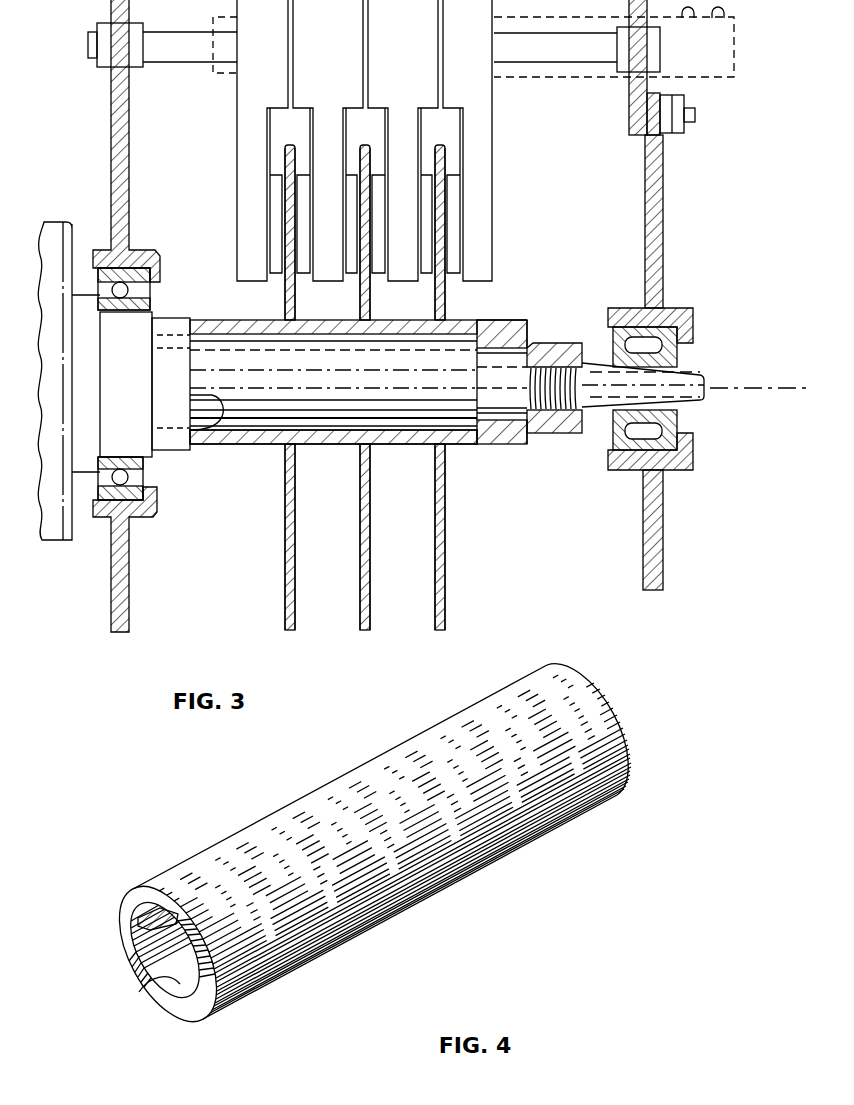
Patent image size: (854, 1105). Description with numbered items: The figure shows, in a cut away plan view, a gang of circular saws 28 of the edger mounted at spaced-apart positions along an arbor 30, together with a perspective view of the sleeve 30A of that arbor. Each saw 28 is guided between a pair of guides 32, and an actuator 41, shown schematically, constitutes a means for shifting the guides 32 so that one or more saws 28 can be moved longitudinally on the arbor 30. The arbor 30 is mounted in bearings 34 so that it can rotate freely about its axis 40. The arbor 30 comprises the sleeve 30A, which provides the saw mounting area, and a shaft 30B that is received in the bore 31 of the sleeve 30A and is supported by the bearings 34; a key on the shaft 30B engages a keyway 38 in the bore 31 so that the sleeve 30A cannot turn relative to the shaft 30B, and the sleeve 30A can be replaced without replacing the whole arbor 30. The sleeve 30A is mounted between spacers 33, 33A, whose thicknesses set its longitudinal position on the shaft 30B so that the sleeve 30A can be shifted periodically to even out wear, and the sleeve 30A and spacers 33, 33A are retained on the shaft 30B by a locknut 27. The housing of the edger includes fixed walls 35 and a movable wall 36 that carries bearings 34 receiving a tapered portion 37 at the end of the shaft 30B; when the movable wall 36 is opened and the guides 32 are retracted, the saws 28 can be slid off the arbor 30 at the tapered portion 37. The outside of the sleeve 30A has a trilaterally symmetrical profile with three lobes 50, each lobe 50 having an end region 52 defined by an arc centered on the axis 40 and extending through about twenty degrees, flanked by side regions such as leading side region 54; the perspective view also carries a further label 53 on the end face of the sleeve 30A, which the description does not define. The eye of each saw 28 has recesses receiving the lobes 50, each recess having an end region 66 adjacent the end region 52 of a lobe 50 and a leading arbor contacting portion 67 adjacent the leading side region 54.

In FIG. 3, the locknut 27 is at (568, 436).
In FIG. 3, the circular saw 28 is at (280, 150).
In FIG. 3, the arbor 30 is at (528, 298).
In FIG. 3, the sleeve 30A is at (230, 449).
In FIG. 4, the sleeve 30A is at (338, 866).
In FIG. 3, the shaft 30B is at (453, 420).
In FIG. 3, the bore 31 is at (190, 405).
In FIG. 4, the bore 31 is at (175, 978).
In FIG. 3, the guide 32 is at (495, 167).
In FIG. 3, the spacer 33 is at (163, 320).
In FIG. 3, the spacer 33A is at (530, 327).
In FIG. 3, the bearing 34 is at (147, 300).
In FIG. 3, the fixed wall 35 is at (110, 122).
In FIG. 3, the movable wall 36 is at (665, 203).
In FIG. 3, the tapered portion 37 is at (700, 371).
In FIG. 3, the keyway 38 is at (345, 340).
In FIG. 4, the keyway 38 is at (141, 911).
In FIG. 3, the axis 40 is at (779, 392).
In FIG. 3, the actuator 41 is at (717, 67).
In FIG. 3, the lobe 50 is at (462, 317).
In FIG. 4, the lobe 50 is at (156, 890).
In FIG. 4, the end region 52 is at (266, 830).
In FIG. 4, the end face 53 is at (123, 922).
In FIG. 3, the leading side region 54 is at (273, 447).
In FIG. 3, the end region 66 is at (284, 314).
In FIG. 3, the leading arbor contacting portion 67 is at (356, 446).